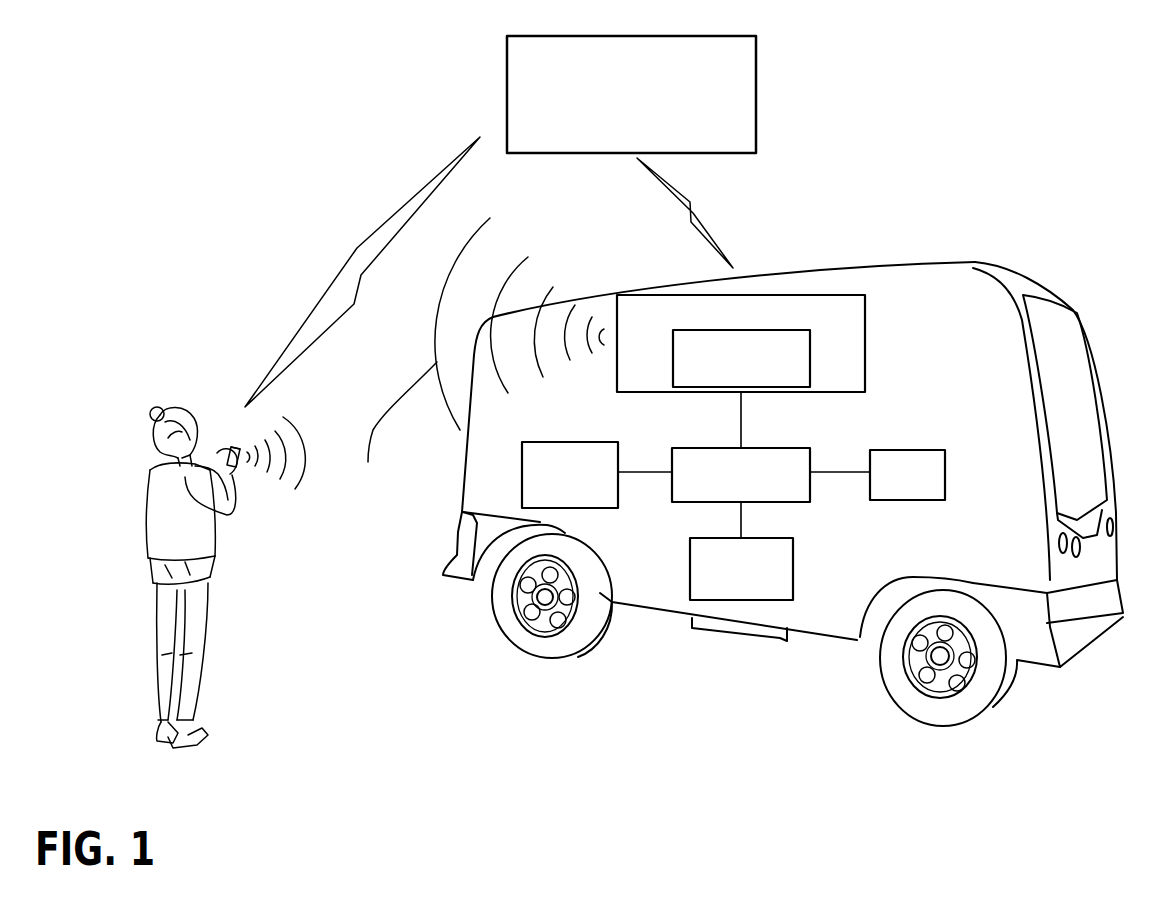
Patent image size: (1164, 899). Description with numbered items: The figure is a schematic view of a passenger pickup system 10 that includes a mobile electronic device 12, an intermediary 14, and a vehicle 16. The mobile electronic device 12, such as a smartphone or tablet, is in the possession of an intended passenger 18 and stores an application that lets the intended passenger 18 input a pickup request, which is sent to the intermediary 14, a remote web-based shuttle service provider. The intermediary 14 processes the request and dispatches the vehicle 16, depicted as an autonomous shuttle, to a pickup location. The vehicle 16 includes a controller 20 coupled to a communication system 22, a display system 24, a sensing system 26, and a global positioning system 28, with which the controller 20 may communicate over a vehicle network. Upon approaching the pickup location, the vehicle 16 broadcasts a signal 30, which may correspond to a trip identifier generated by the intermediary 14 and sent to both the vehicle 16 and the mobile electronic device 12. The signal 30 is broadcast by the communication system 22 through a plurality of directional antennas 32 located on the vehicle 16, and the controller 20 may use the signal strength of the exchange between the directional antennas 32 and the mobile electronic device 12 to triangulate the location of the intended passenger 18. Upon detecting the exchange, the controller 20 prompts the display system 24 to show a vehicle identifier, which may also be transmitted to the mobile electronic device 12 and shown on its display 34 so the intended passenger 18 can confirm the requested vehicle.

The passenger pickup system 10 is at (203, 323).
The mobile electronic device 12 is at (225, 450).
The intermediary 14 is at (757, 97).
The vehicle 16 is at (939, 278).
The intended passenger 18 is at (160, 478).
The controller 20 is at (778, 448).
The communication system 22 is at (781, 295).
The display system 24 is at (580, 442).
The sensing system 26 is at (690, 573).
The global positioning system (GPS) 28 is at (908, 450).
The signal 30 is at (298, 437).
The directional antennas 32 is at (811, 358).
The display 34 is at (233, 447).